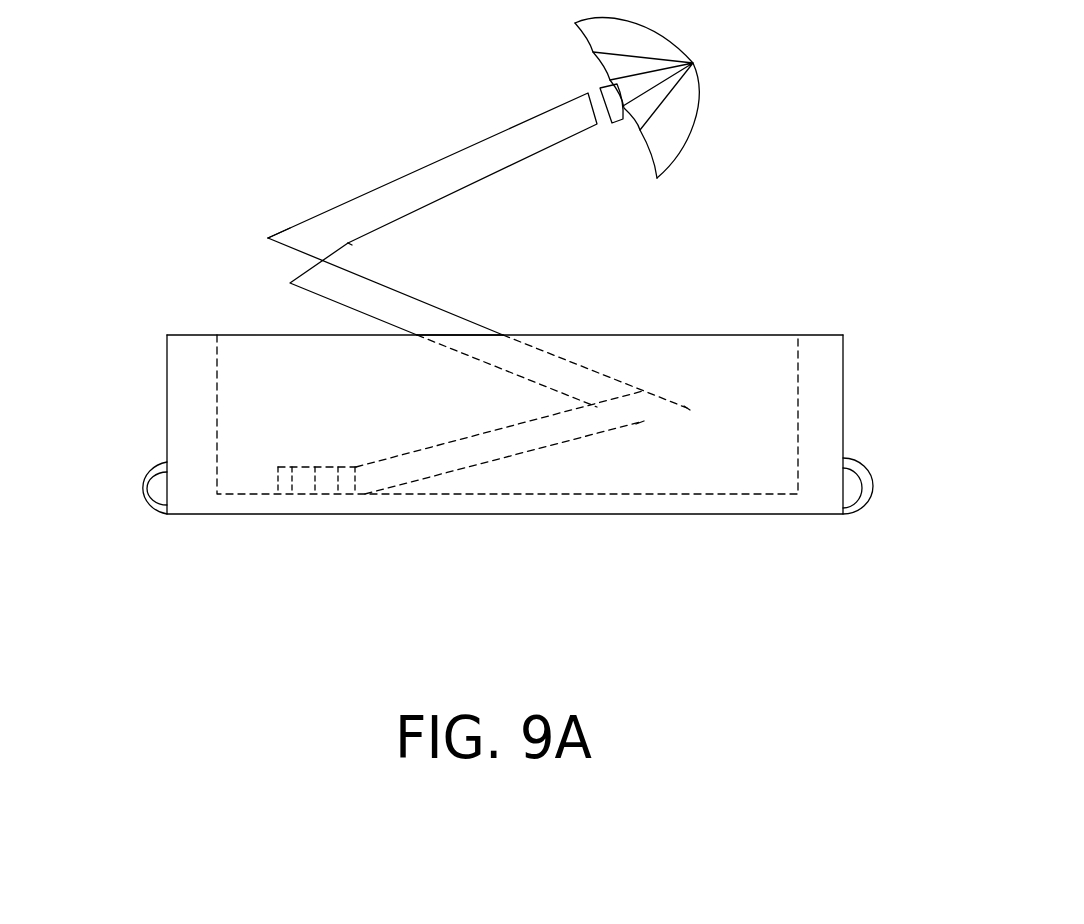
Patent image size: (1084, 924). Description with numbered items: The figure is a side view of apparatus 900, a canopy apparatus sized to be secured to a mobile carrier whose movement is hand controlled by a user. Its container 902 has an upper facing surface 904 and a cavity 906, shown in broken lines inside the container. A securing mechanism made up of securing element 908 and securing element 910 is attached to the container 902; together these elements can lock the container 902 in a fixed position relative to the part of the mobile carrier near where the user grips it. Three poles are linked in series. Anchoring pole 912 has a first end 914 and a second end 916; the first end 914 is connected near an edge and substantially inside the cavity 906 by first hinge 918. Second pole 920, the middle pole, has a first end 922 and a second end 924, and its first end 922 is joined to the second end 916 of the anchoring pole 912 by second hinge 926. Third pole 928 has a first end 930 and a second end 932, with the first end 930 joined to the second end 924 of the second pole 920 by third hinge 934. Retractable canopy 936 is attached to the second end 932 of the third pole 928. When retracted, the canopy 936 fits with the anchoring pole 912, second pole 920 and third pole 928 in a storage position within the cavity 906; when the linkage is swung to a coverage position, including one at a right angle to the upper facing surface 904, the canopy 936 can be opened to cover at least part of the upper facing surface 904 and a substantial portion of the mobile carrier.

The apparatus 900 is at (138, 408).
The container 902 is at (238, 516).
The upper facing surface 904 is at (188, 335).
The cavity 906 is at (750, 357).
The securing element 908 is at (135, 487).
The securing element 910 is at (873, 490).
The anchoring pole 912 is at (565, 443).
The first end 914 is at (388, 489).
The second end 916 is at (641, 423).
The first hinge 918 is at (318, 495).
The second pole 920 is at (500, 335).
The first end 922 is at (630, 385).
The second end 924 is at (300, 290).
The second hinge 926 is at (687, 408).
The third pole 928 is at (483, 180).
The first end 930 is at (290, 228).
The second end 932 is at (588, 92).
The third hinge 934 is at (348, 245).
The retractable canopy 936 is at (698, 94).